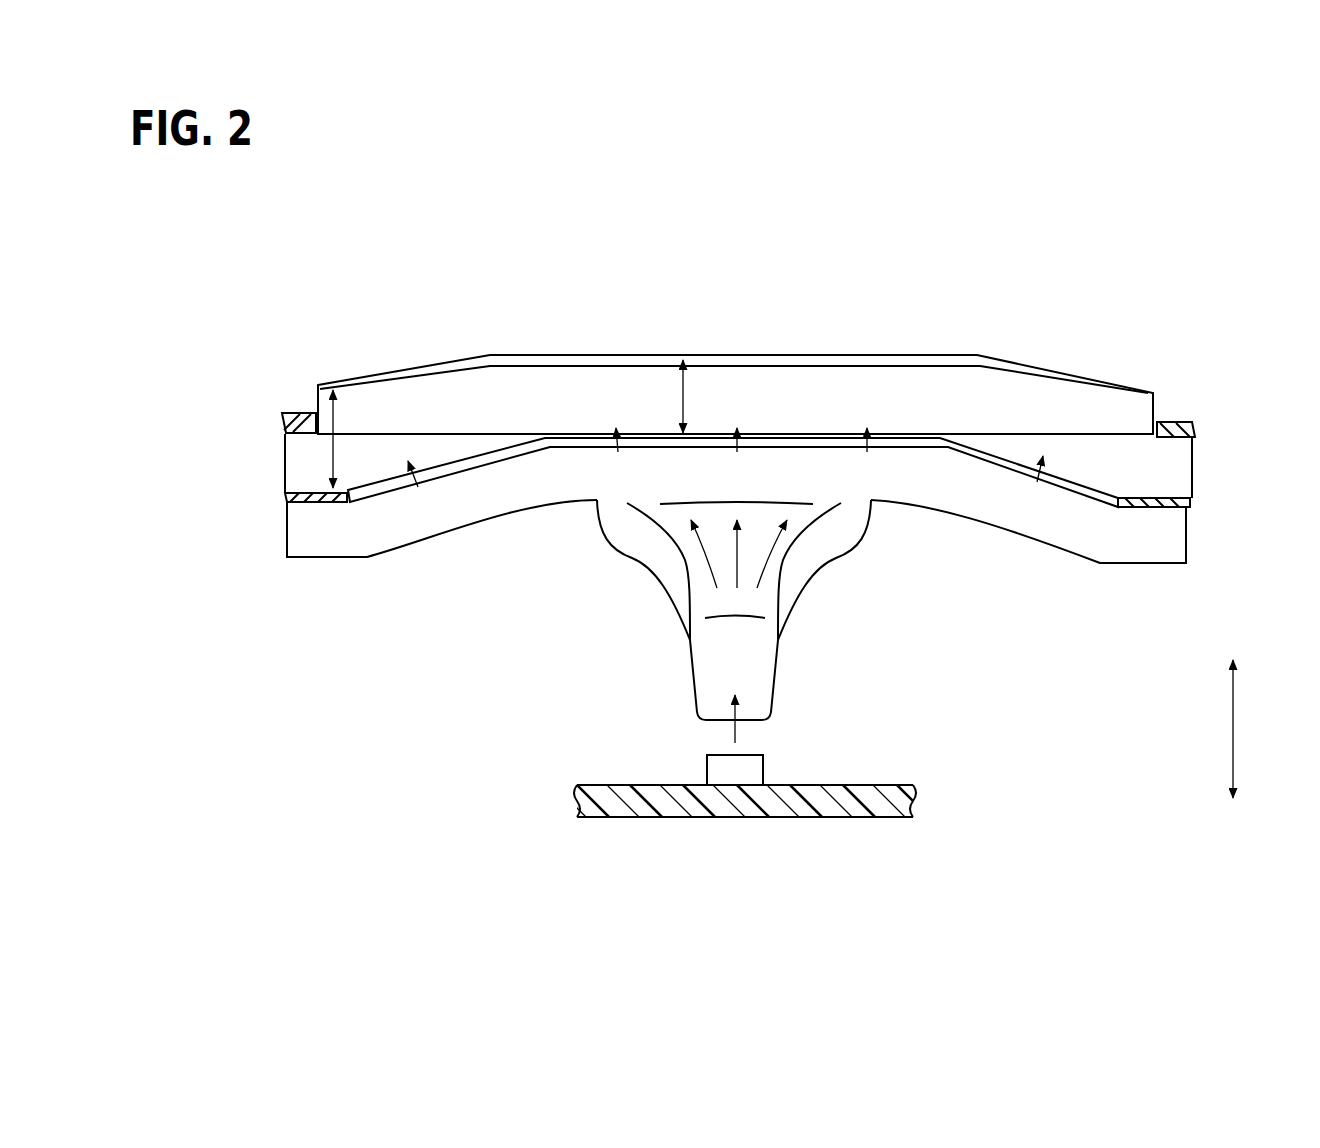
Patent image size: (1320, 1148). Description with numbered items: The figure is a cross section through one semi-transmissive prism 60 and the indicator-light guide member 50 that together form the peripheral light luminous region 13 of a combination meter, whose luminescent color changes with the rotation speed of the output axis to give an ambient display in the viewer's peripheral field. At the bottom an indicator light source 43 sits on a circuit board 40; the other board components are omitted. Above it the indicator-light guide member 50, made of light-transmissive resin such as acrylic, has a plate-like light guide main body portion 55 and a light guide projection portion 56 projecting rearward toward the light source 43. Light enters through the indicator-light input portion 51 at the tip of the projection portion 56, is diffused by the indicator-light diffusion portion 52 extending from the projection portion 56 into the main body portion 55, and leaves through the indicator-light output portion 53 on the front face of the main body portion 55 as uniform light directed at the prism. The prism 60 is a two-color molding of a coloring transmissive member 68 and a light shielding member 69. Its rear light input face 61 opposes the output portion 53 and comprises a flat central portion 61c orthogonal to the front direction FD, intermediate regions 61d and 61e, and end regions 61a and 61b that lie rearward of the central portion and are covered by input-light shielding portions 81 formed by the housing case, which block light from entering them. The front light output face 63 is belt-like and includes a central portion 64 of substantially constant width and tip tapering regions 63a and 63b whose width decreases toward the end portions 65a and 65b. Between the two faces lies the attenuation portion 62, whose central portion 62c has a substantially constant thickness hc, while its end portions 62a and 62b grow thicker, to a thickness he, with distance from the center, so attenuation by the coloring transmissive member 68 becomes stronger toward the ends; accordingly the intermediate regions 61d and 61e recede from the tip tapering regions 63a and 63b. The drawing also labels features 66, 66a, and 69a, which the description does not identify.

The peripheral light luminous region 13 is at (1064, 368).
The circuit board 40 is at (837, 817).
The indicator light source 43 is at (763, 765).
The indicator-light guide member 50 is at (1138, 563).
The indicator-light input portion 51 is at (760, 722).
The indicator-light diffusion portion 52 is at (528, 480).
The indicator-light output portion 53 is at (589, 440).
The light guide main body portion 55 is at (1003, 527).
The light guide projection portion 56 is at (767, 658).
The semi-transmissive prism 60 is at (417, 240).
The light input face 61 is at (892, 440).
The end region 61a is at (1185, 515).
The end region 61b is at (293, 512).
The central portion 61c is at (843, 438).
The intermediate region 61d is at (1062, 473).
The intermediate region 61e is at (460, 452).
The attenuation portion 62 is at (933, 390).
The end portion 62a is at (1117, 455).
The end portion 62b is at (381, 453).
The central portion 62c is at (777, 400).
The light output face 63 is at (632, 356).
The tip tapering region 63a is at (1110, 385).
The tip tapering region 63b is at (412, 368).
The central portion 64 is at (729, 366).
The end portion 65a is at (1156, 387).
The end portion 65b is at (318, 385).
The lower wall of upper plate 66 is at (1113, 412).
The inner surface 66a is at (632, 356).
The coloring transmissive member 68 is at (396, 372).
The light shielding member 69 is at (298, 425).
The left end of lower layer 69a is at (303, 434).
The input-light shielding portion 81 is at (292, 503).
The thickness of end portion he is at (340, 425).
The thickness of central portion hc is at (684, 397).
The front direction FD is at (1254, 728).